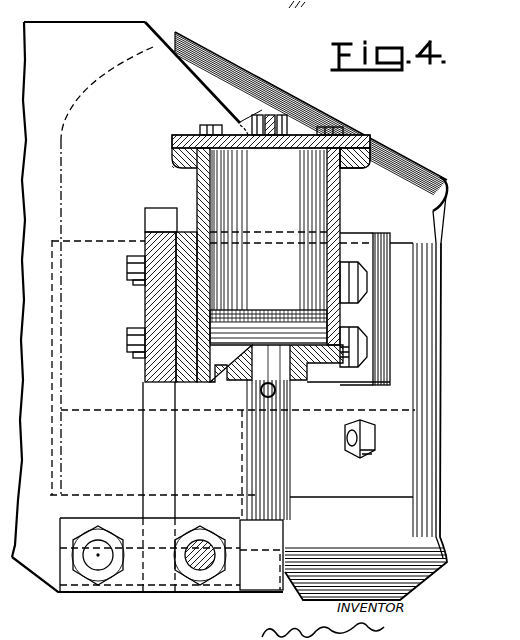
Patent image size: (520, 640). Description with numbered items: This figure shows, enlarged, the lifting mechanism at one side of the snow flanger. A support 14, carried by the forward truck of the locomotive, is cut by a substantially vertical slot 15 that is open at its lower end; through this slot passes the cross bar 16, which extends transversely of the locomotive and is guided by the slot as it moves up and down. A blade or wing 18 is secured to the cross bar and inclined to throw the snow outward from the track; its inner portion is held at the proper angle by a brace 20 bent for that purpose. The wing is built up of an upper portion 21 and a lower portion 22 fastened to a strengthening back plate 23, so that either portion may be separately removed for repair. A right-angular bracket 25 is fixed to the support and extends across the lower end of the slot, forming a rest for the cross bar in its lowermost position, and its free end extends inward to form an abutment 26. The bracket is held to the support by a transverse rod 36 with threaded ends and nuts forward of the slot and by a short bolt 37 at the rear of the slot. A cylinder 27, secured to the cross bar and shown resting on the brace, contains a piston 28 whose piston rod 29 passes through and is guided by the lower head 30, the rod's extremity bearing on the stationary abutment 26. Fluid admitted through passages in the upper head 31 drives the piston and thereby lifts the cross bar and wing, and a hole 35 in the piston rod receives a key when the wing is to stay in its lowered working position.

The support 14 is at (213, 307).
The slot 15 is at (162, 208).
The cross bar 16 is at (146, 307).
The blade or wing 18 is at (311, 137).
The brace 20 is at (392, 240).
The upper portion of the wing 21 is at (365, 170).
The lower portion of the wing 22 is at (366, 421).
The back plate 23 is at (351, 370).
The bracket 25 is at (131, 576).
The abutment 26 is at (268, 584).
The cylinder 27 is at (340, 229).
The piston 28 is at (278, 313).
The piston rod 29 is at (289, 432).
The lower head 30 is at (297, 377).
The upper head 31 is at (196, 135).
The hole 35 is at (260, 391).
The transverse rod 36 is at (203, 573).
The short bolt 37 is at (72, 563).